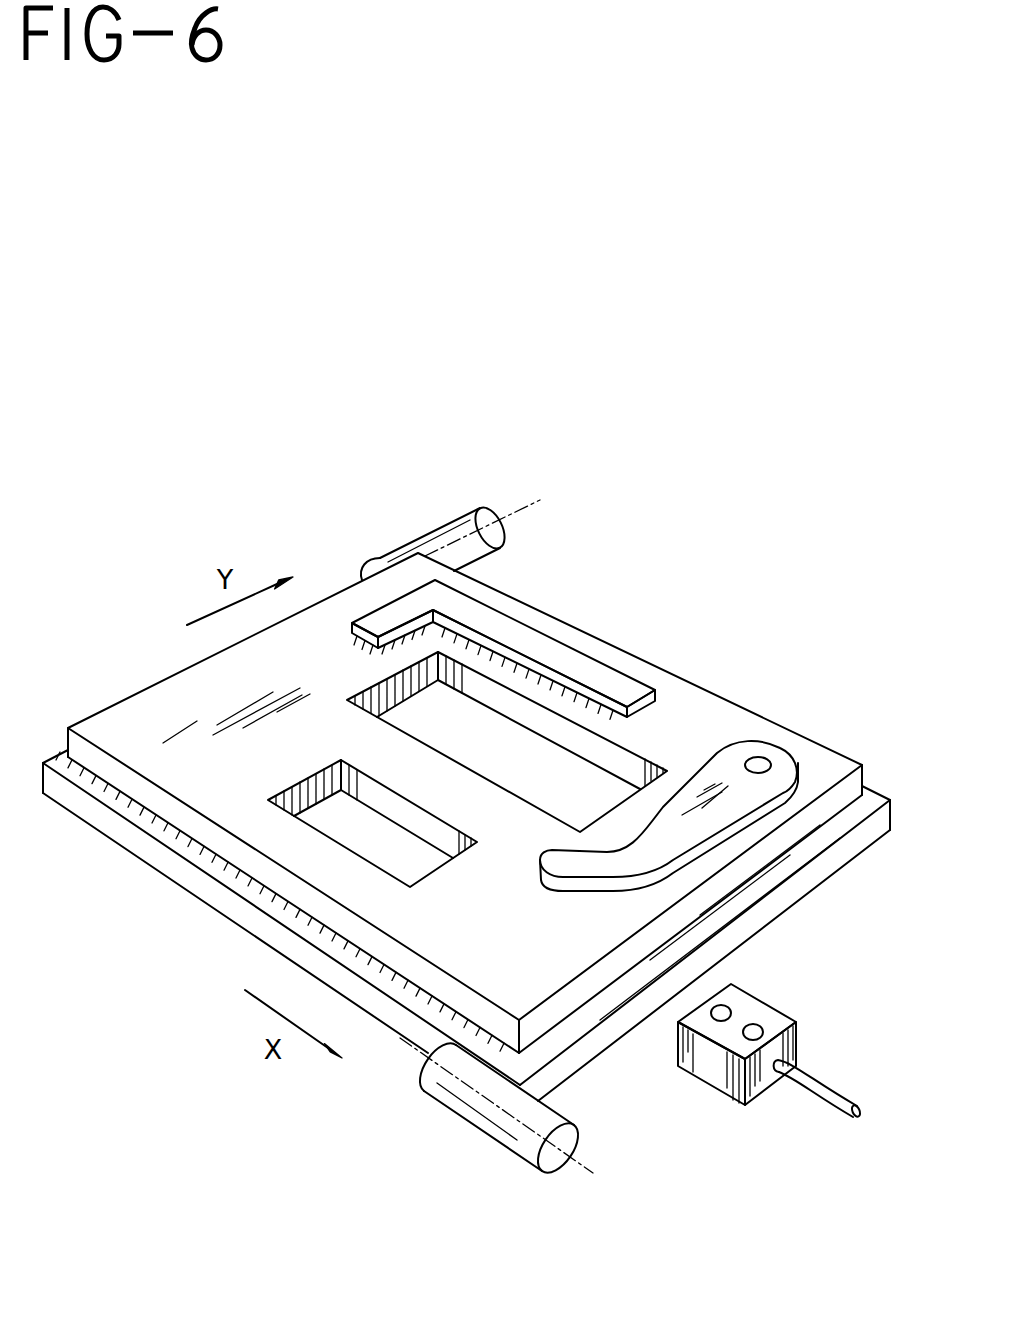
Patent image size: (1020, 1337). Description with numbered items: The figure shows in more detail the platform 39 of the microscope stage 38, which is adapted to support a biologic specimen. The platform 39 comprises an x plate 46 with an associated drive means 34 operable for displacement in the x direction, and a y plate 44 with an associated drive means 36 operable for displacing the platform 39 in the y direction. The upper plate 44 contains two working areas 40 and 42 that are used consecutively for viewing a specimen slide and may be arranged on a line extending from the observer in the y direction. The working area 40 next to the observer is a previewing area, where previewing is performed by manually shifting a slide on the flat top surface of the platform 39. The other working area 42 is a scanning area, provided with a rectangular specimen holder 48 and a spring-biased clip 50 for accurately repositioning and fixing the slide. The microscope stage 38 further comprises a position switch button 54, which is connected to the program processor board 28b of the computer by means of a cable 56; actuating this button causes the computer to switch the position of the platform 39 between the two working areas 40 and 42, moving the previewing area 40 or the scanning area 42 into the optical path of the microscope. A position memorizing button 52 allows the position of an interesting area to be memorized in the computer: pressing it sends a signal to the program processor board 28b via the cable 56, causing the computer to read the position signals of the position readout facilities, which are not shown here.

The program processor board 28b is at (633, 1105).
The drive means 34 is at (477, 1110).
The drive means 36 is at (472, 525).
The microscope stage 38 is at (674, 623).
The platform 39 is at (220, 773).
The working area 40 is at (355, 835).
The working area 42 is at (650, 757).
The y plate 44 is at (192, 685).
The x plate 46 is at (60, 762).
The specimen holder 48 is at (578, 658).
The clip 50 is at (767, 752).
The position memorizing button 52 is at (720, 1007).
The position switch button 54 is at (753, 1032).
The cable 56 is at (823, 1103).